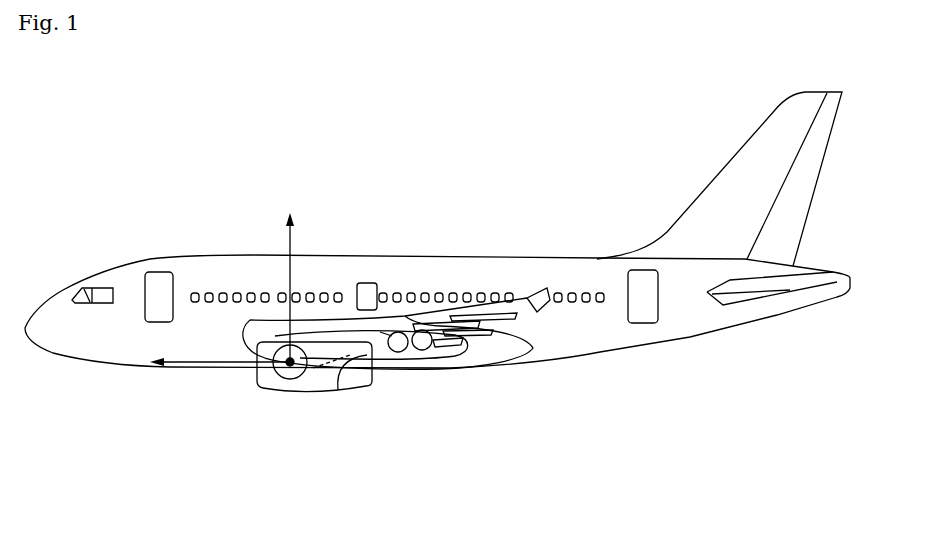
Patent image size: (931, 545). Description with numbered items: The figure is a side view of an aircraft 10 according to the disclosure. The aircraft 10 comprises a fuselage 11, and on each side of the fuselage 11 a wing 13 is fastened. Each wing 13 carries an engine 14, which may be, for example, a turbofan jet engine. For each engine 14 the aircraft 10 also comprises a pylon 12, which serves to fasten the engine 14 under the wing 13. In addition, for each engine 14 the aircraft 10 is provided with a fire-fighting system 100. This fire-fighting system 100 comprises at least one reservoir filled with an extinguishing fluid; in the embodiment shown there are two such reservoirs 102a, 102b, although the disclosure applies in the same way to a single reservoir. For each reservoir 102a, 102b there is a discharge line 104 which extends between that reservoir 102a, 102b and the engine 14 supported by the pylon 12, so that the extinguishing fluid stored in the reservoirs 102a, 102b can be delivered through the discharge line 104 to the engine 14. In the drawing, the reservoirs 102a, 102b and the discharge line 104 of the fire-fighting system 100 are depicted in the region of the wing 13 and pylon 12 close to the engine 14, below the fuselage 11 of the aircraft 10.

The aircraft 10 is at (590, 180).
The fuselage 11 is at (597, 338).
The pylon 12 is at (385, 330).
The wing 13 is at (488, 310).
The engine 14 is at (262, 388).
The fire-fighting system 100 is at (515, 431).
The reservoir 102a is at (430, 350).
The reservoir 102b is at (403, 352).
The discharge line 104 is at (335, 370).